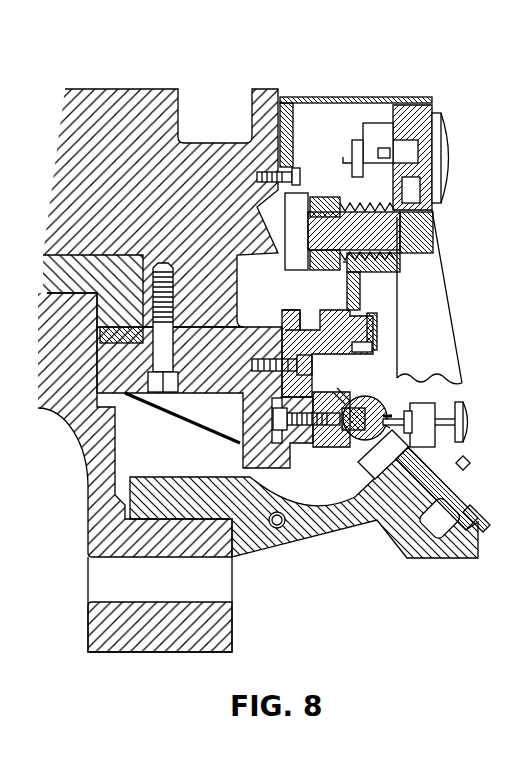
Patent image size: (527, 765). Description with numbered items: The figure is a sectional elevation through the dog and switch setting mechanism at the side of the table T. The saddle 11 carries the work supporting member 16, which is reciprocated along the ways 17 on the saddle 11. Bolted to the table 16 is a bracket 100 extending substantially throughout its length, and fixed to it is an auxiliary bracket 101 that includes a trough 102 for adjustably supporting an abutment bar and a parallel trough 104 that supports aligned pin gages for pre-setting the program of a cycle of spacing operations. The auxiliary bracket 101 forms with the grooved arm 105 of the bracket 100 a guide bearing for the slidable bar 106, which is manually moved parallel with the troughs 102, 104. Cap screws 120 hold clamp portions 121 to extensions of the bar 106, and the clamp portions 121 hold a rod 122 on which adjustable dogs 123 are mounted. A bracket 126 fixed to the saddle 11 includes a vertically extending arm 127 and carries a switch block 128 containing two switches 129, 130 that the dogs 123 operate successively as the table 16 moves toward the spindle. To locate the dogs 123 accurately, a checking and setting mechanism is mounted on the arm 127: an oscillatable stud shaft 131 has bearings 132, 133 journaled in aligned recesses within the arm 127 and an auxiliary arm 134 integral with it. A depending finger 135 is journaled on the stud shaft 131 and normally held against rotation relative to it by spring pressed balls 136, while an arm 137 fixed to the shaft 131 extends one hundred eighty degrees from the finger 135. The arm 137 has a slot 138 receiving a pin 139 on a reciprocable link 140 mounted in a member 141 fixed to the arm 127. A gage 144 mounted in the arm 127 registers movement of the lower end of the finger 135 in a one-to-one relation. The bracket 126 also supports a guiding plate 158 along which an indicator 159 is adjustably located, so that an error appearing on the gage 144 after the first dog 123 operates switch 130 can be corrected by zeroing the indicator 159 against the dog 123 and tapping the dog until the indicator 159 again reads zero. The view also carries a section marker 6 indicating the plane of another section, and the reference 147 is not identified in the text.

The table T is at (82, 66).
The work supporting member 16 is at (137, 107).
The ways 17 is at (137, 302).
The saddle 11 is at (97, 543).
The bracket 100 is at (122, 387).
The auxiliary bracket 101 is at (325, 345).
The trough 102 is at (313, 302).
The trough 104 is at (378, 319).
The grooved arm 105 is at (243, 463).
The slidable bar 106 is at (287, 417).
The cap screws 120 is at (240, 443).
The clamp portions 121 is at (350, 440).
The rod 122 is at (357, 410).
The dogs 123 is at (385, 420).
The bracket 126 is at (332, 523).
The arm 127 is at (435, 276).
The switch block 128 is at (397, 440).
The switch 129 is at (385, 408).
The switch 130 is at (373, 447).
The stud shaft 131 is at (388, 227).
The bearing 132 is at (430, 244).
The bearing 133 is at (317, 228).
The auxiliary arm 134 is at (318, 222).
The depending finger 135 is at (360, 300).
The spring pressed balls 136 is at (391, 270).
The arm 137 is at (390, 140).
The slot 138 is at (393, 163).
The pin 139 is at (382, 155).
The reciprocable link 140 is at (372, 157).
The member 141 is at (377, 143).
The gage 144 is at (442, 185).
The spring 147 is at (342, 268).
The guiding plate 158 is at (478, 512).
The indicator 159 is at (463, 407).
The section line 6 is at (478, 168).